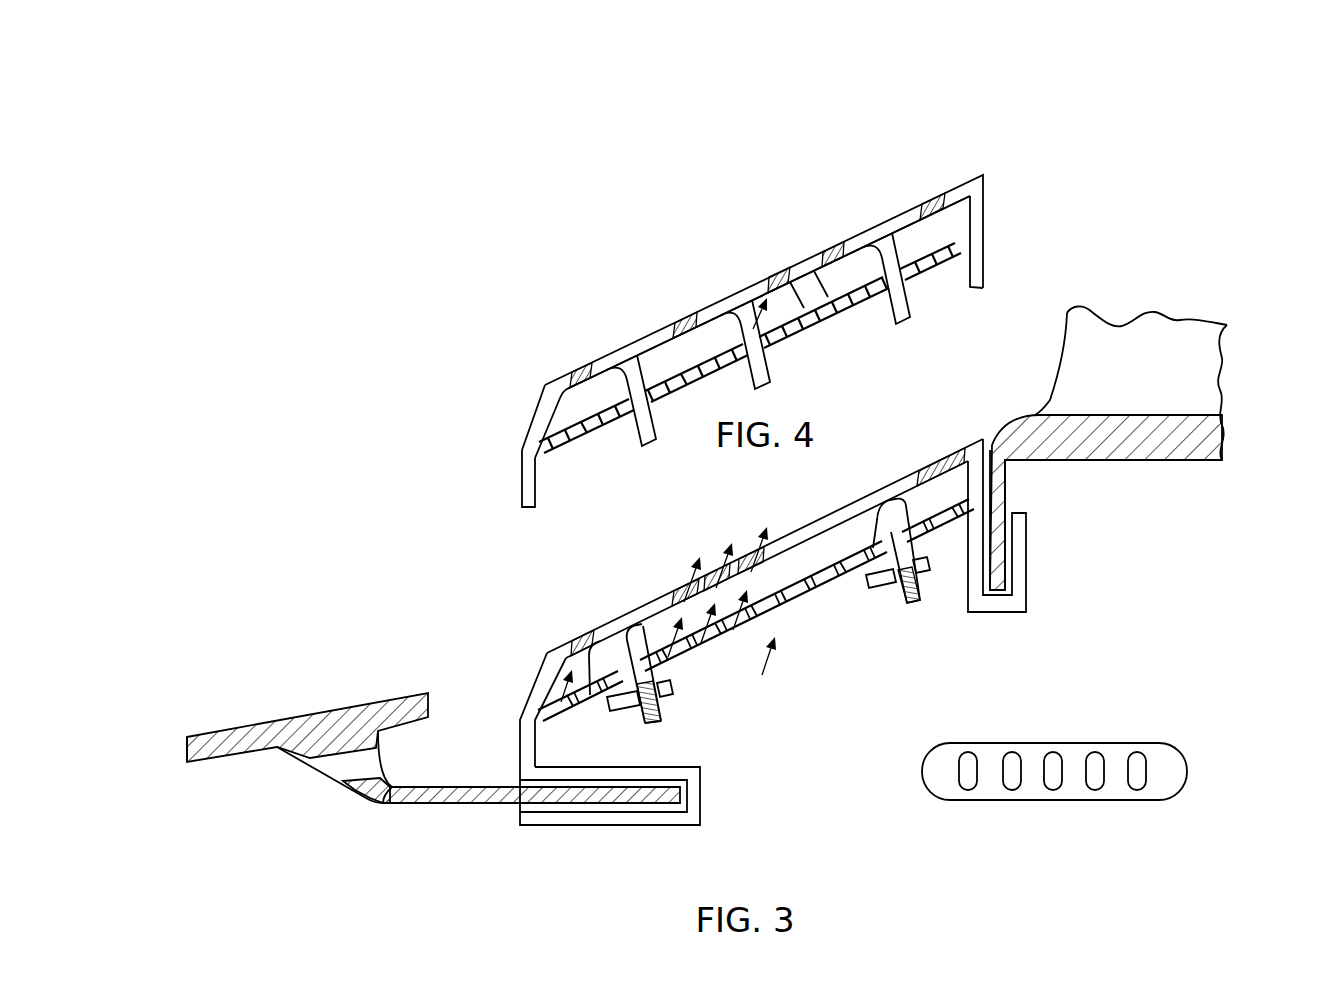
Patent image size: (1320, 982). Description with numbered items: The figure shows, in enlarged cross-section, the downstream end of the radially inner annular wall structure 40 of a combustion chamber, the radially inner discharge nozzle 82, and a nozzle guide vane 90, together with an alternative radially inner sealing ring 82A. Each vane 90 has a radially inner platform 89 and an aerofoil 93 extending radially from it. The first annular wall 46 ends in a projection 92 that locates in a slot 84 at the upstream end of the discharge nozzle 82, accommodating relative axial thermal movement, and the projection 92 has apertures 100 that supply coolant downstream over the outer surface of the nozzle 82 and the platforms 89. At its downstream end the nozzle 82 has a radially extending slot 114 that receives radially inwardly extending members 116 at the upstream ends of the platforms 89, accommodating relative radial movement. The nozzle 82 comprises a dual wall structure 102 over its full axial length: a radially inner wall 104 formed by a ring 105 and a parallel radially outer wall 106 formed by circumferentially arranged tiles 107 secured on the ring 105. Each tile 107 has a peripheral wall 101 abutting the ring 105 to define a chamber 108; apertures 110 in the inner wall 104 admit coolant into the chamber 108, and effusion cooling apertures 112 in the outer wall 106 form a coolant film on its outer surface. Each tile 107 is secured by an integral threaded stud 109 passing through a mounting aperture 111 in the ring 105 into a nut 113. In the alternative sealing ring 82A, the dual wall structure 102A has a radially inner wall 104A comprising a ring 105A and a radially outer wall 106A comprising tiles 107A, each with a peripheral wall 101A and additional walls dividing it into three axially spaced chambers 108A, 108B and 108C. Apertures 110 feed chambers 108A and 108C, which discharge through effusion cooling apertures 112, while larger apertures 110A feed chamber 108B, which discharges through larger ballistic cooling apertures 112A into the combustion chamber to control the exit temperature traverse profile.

In FIG. 3, the radially inner annular wall structure 40 is at (255, 757).
In FIG. 3, the first annular wall 46 is at (203, 752).
In FIG. 3, the radially inner discharge nozzle 82 is at (968, 670).
In FIG. 4, the radially inner sealing ring 82A is at (1032, 135).
In FIG. 3, the slot 84 is at (588, 812).
In FIG. 3, the radially inner platform 89 is at (1177, 440).
In FIG. 3, the nozzle guide vane 90 is at (1168, 338).
In FIG. 3, the projection 92 is at (466, 797).
In FIG. 3, the aerofoil 93 is at (1195, 362).
In FIG. 3, the apertures 100 is at (345, 768).
In FIG. 3, the peripheral wall 101 is at (990, 485).
In FIG. 4, the peripheral wall 101A is at (988, 192).
In FIG. 3, the dual wall structure 102 is at (778, 655).
In FIG. 4, the dual wall structure 102A is at (935, 135).
In FIG. 3, the radially inner wall 104 is at (795, 630).
In FIG. 4, the radially inner wall 104A is at (823, 295).
In FIG. 3, the ring 105 is at (562, 715).
In FIG. 4, the ring 105A is at (524, 490).
In FIG. 3, the radially outer wall 106 is at (655, 612).
In FIG. 4, the radially outer wall 106A is at (607, 357).
In FIG. 3, the tile 107 is at (537, 675).
In FIG. 4, the tile 107A is at (548, 395).
In FIG. 3, the chamber 108 is at (773, 527).
In FIG. 4, the chamber 108A is at (690, 345).
In FIG. 4, the chamber 108B is at (768, 292).
In FIG. 4, the chamber 108C is at (915, 215).
In FIG. 3, the integral threaded stud 109 is at (916, 572).
In FIG. 4, the apertures 110 is at (588, 445).
In FIG. 3, the apertures 110 is at (862, 575).
In FIG. 4, the apertures 110A is at (785, 308).
In FIG. 3, the mounting aperture 111 is at (899, 537).
In FIG. 4, the effusion cooling apertures 112 is at (936, 205).
In FIG. 3, the effusion cooling apertures 112 is at (785, 528).
In FIG. 4, the ballistic cooling apertures 112A is at (768, 250).
In FIG. 3, the nut 113 is at (1000, 615).
In FIG. 3, the slot 114 is at (1012, 550).
In FIG. 3, the radially inwardly extending member 116 is at (1005, 500).